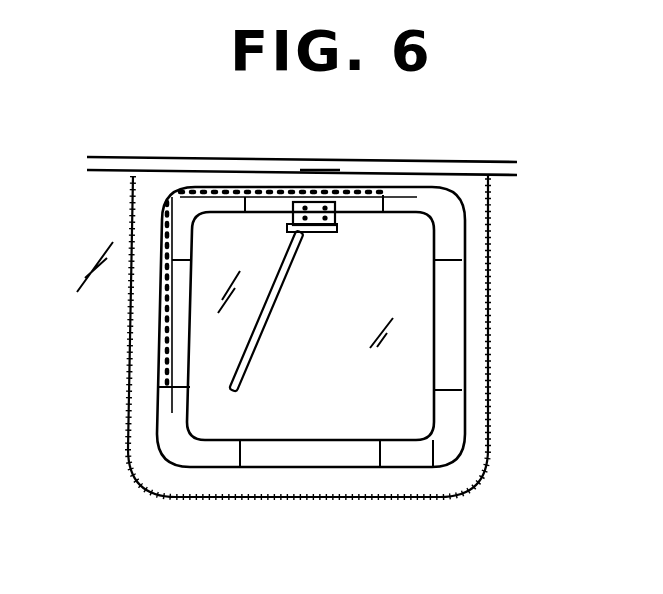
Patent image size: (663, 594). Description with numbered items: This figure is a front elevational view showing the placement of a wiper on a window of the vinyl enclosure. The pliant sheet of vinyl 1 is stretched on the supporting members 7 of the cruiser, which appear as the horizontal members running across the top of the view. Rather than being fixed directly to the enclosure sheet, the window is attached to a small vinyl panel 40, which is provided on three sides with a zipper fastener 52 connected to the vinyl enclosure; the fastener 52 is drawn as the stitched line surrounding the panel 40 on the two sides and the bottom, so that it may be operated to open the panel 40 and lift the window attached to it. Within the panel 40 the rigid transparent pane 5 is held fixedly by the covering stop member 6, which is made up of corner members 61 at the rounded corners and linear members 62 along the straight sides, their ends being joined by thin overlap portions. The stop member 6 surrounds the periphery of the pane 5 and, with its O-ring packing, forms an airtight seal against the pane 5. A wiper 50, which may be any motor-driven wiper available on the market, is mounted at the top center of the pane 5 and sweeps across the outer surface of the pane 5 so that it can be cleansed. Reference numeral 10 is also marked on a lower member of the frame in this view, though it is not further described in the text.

The pliant sheet of vinyl 1 is at (105, 190).
The small vinyl panel 40 is at (157, 190).
The supporting members 7 is at (315, 170).
The zipper fastener 52 is at (489, 335).
The rigid transparent pane 5 is at (415, 283).
The linear members 62 is at (446, 370).
The corner members 61 is at (443, 436).
The bottom frame member 10 is at (317, 468).
The covering stop member 6 is at (215, 467).
The wiper 50 is at (273, 308).